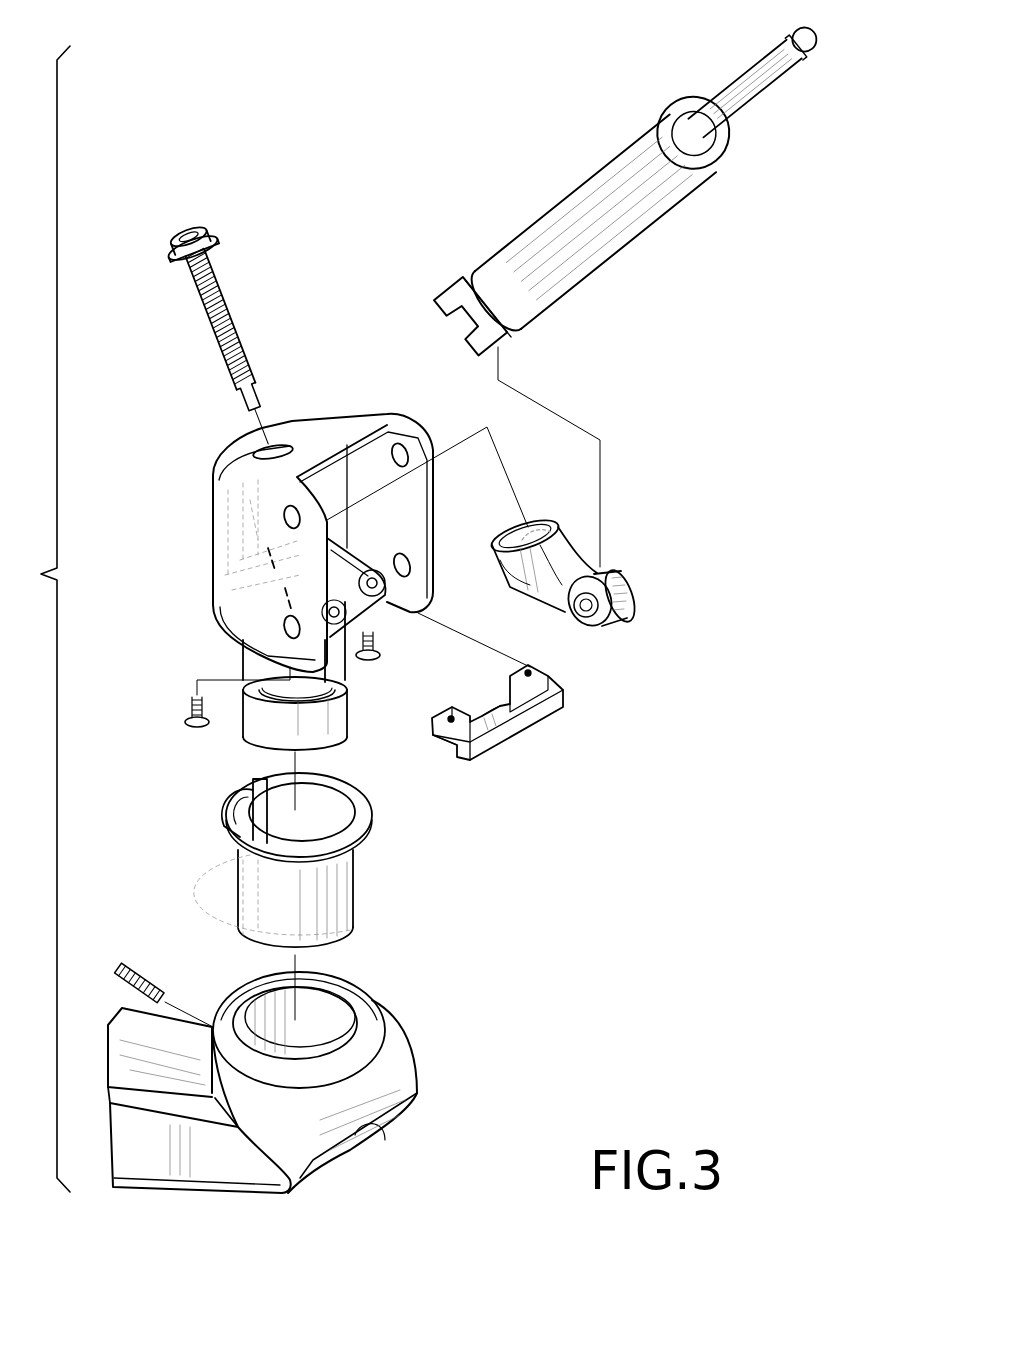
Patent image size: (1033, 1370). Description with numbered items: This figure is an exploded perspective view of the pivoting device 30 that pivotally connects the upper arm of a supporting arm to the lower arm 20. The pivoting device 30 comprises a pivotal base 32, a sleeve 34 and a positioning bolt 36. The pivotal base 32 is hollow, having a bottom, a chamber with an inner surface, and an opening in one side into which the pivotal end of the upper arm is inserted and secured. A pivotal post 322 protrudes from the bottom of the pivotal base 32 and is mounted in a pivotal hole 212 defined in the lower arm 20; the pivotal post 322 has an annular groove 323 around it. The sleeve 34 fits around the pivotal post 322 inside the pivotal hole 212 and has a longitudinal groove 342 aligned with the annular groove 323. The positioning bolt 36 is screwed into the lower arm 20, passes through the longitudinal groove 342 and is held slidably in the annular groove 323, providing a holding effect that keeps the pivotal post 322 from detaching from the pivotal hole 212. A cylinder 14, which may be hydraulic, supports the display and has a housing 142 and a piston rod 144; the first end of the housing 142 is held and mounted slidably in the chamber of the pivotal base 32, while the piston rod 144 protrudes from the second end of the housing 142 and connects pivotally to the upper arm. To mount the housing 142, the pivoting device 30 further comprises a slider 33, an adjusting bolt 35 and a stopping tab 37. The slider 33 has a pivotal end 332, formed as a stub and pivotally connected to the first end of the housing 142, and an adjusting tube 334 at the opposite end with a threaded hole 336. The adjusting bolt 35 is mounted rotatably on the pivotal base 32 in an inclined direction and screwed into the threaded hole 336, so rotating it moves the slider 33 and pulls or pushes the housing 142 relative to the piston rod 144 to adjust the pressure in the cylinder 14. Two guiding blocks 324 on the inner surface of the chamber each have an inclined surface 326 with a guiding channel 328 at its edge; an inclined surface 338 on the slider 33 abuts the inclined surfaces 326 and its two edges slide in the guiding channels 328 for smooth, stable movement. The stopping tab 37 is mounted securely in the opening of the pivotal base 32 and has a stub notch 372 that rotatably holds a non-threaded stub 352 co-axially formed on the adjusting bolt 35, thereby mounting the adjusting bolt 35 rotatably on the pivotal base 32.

The cylinder 14 is at (621, 180).
The housing 142 is at (622, 155).
The piston rod 144 is at (738, 69).
The lower arm 20 is at (322, 1071).
The pivotal hole 212 is at (343, 1023).
The pivoting device 30 is at (320, 400).
The pivotal base 32 is at (280, 511).
The pivotal post 322 is at (286, 693).
The annular groove 323 is at (317, 707).
The guiding block 324 is at (245, 525).
The inclined surface 326 is at (268, 560).
The guiding channel 328 is at (292, 612).
The slider 33 is at (578, 607).
The pivotal end 332 is at (605, 637).
The adjusting tube 334 is at (550, 540).
The threaded hole 336 is at (528, 537).
The inclined surface 338 is at (498, 570).
The sleeve 34 is at (297, 860).
The longitudinal groove 342 is at (252, 810).
The adjusting bolt 35 is at (218, 337).
The non-threaded stub 352 is at (250, 405).
The positioning bolt 36 is at (128, 965).
The stopping tab 37 is at (505, 721).
The stub notch 372 is at (503, 700).